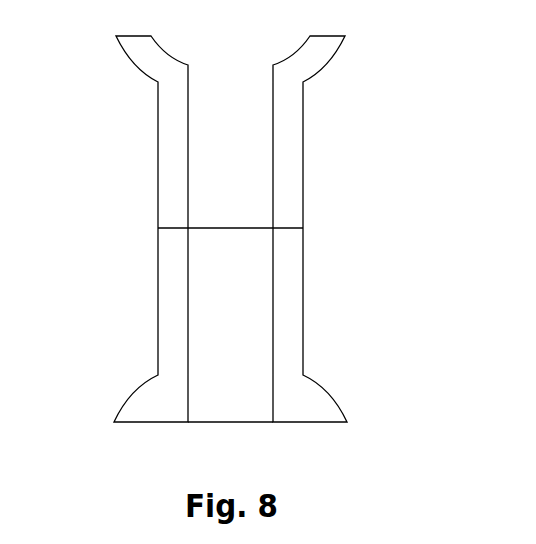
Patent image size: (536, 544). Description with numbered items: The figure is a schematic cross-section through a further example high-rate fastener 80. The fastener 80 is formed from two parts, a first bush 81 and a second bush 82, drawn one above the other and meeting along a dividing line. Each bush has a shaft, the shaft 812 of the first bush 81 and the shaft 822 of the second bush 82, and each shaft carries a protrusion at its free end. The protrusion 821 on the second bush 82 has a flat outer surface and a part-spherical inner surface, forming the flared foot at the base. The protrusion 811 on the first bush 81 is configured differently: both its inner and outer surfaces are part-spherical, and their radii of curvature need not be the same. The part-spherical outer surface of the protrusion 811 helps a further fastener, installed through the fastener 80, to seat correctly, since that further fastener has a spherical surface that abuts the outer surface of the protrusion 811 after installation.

The high-rate fastener 80 is at (241, 229).
The first bush 81 is at (207, 132).
The second bush 82 is at (213, 325).
The protrusion 811 is at (135, 50).
The shaft 812 is at (290, 127).
The protrusion 821 is at (137, 404).
The shaft 822 is at (290, 308).